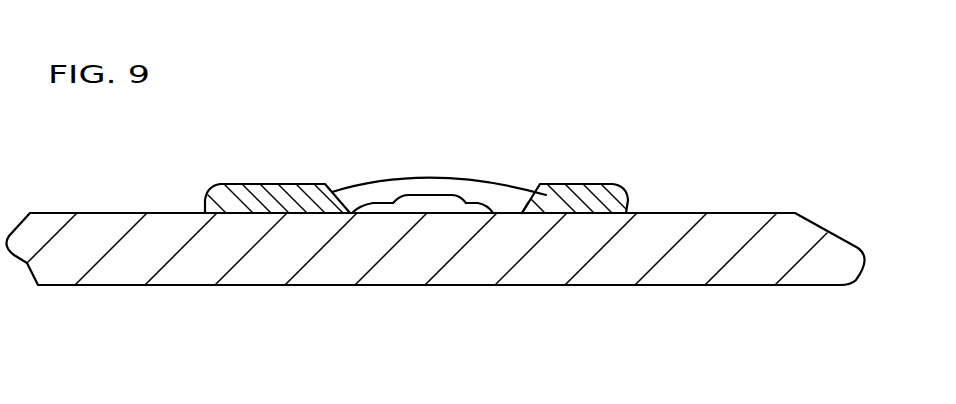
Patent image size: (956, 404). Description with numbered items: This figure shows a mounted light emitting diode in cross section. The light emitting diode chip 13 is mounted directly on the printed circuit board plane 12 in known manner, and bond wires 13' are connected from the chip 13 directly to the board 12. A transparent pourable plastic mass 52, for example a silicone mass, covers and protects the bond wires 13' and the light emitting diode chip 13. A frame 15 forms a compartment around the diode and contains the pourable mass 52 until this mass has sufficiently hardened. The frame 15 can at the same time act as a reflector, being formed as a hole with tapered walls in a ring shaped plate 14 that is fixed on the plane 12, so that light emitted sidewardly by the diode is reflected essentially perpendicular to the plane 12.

The printed circuit board plane 12 is at (677, 270).
The light emitting diode chip 13 is at (429, 166).
The bond wires 13' is at (412, 169).
The ring shaped plate 14 is at (220, 184).
The frame 15 is at (522, 203).
The transparent pourable plastic mass 52 is at (400, 178).